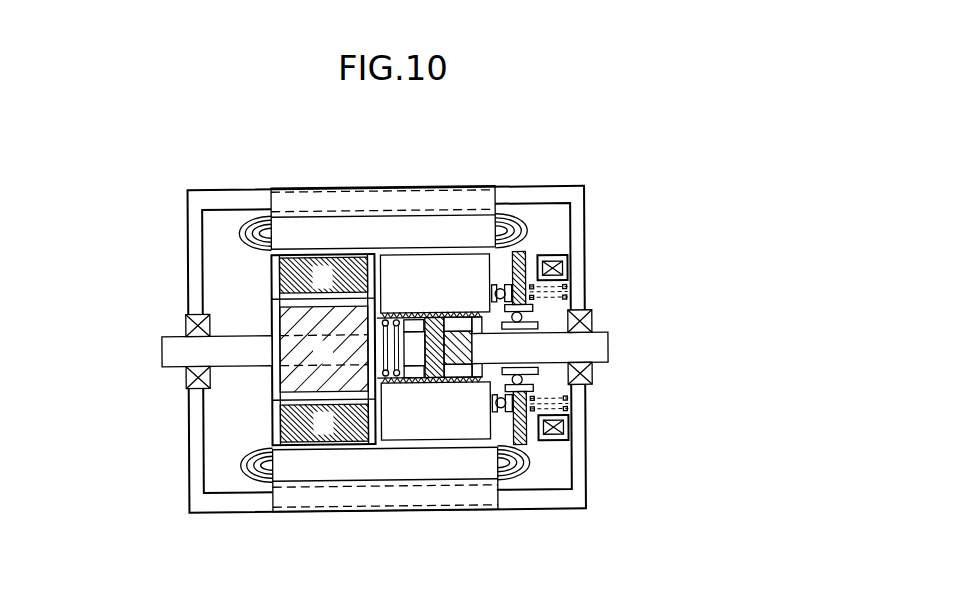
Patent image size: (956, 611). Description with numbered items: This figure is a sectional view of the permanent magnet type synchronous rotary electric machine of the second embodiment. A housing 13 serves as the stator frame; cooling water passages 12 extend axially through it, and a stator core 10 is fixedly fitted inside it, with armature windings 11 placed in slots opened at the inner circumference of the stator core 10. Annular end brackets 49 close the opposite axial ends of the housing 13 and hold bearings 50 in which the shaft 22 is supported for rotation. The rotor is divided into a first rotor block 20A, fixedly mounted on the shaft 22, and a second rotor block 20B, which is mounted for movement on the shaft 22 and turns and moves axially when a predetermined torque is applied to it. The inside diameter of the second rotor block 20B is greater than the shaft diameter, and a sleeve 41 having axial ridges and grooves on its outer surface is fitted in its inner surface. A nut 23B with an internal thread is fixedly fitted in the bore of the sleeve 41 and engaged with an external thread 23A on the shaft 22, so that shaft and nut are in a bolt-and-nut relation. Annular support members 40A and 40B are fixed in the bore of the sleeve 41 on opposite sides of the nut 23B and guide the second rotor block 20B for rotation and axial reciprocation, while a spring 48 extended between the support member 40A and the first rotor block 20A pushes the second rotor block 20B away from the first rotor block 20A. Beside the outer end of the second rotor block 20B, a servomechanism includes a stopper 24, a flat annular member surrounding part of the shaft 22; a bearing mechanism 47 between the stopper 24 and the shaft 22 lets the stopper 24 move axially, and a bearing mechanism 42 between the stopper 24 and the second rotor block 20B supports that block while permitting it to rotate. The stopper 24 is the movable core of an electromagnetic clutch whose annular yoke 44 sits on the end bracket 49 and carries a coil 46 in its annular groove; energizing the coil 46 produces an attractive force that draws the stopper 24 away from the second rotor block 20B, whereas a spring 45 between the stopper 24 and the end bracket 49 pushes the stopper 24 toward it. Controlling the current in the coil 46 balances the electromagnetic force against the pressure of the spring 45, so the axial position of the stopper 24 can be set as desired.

The stator core 10 is at (289, 226).
The armature windings 11 is at (241, 212).
The cooling water passages 12 is at (313, 191).
The housing 13 is at (344, 208).
The first rotor block 20A is at (272, 269).
The second rotor block 20B is at (394, 253).
The shaft 22 is at (166, 366).
The external thread 23A is at (472, 328).
The nut 23B is at (444, 319).
The stopper 24 is at (524, 254).
The support member 40A is at (415, 375).
The support member 40B is at (481, 373).
The sleeve 41 is at (426, 316).
The bearing mechanism 42 is at (503, 406).
The annular yoke 44 is at (558, 258).
The spring 45 is at (567, 291).
The coil 46 is at (566, 272).
The bearing mechanism 47 is at (567, 396).
The spring 48 is at (400, 372).
The end brackets 49 is at (189, 206).
The bearings 50 is at (196, 391).